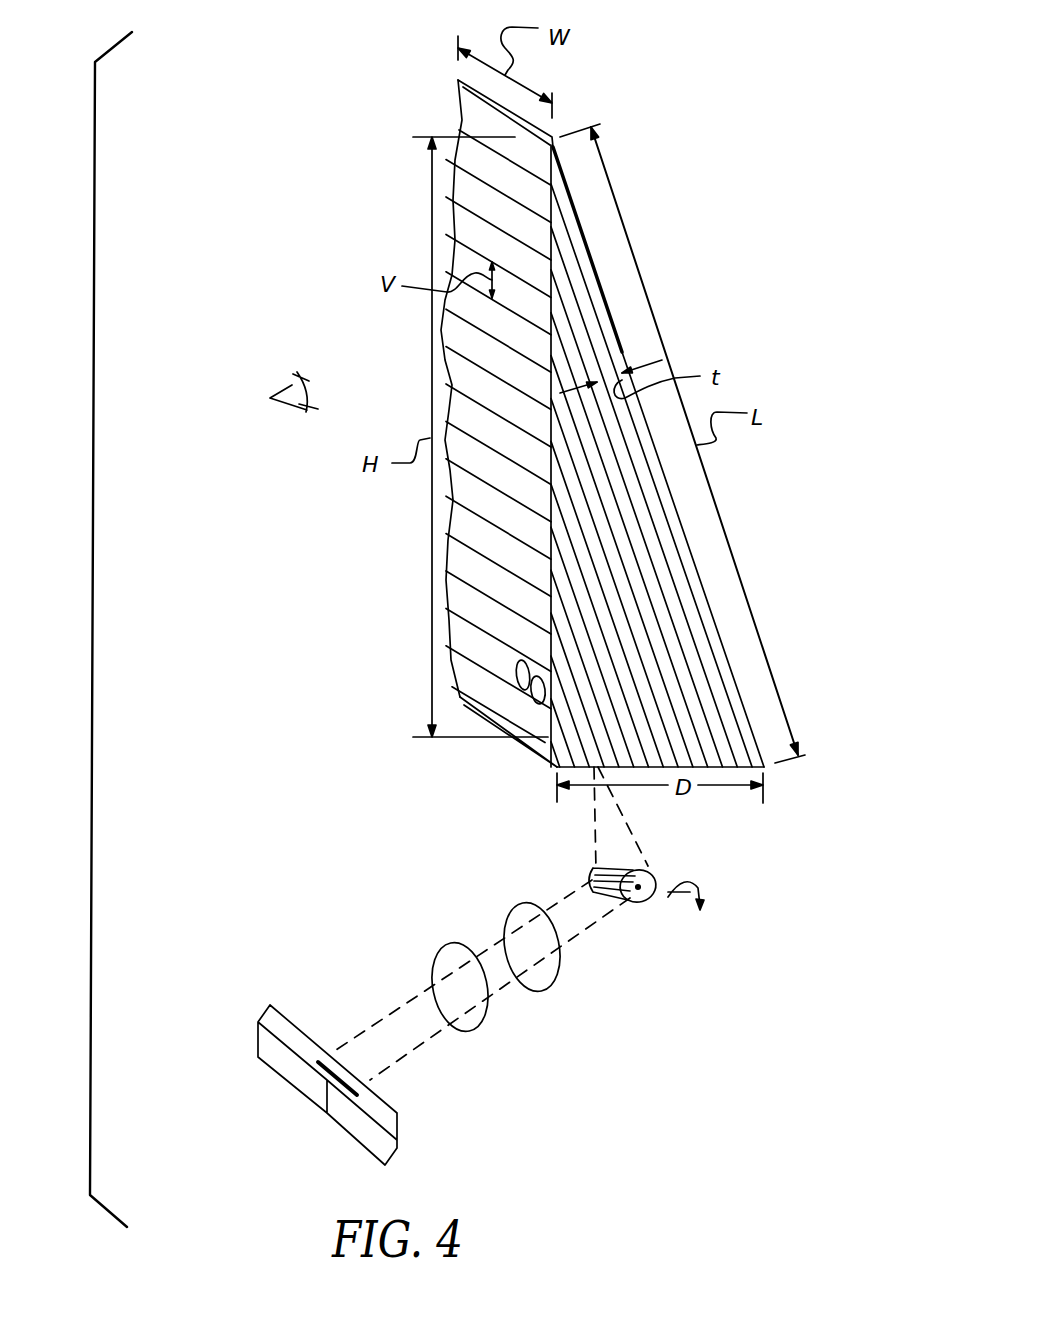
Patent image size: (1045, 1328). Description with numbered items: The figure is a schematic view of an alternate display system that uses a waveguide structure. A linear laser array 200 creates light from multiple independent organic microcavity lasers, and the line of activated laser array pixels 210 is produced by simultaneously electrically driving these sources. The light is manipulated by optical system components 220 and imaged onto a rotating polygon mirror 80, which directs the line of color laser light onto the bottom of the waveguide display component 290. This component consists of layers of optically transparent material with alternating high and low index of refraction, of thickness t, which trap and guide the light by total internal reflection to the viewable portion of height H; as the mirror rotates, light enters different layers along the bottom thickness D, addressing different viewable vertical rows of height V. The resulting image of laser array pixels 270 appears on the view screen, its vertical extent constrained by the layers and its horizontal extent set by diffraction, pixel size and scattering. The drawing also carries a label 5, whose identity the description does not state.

The display system / viewer eye 5 is at (290, 388).
The rotating polygon mirror 80 is at (656, 882).
The linear laser array 200 is at (263, 1030).
The line of activated laser array pixels 210 is at (327, 1113).
The optical system components 220 is at (518, 917).
The image of laser array pixels 270 is at (540, 688).
The waveguide display component 290 is at (462, 127).